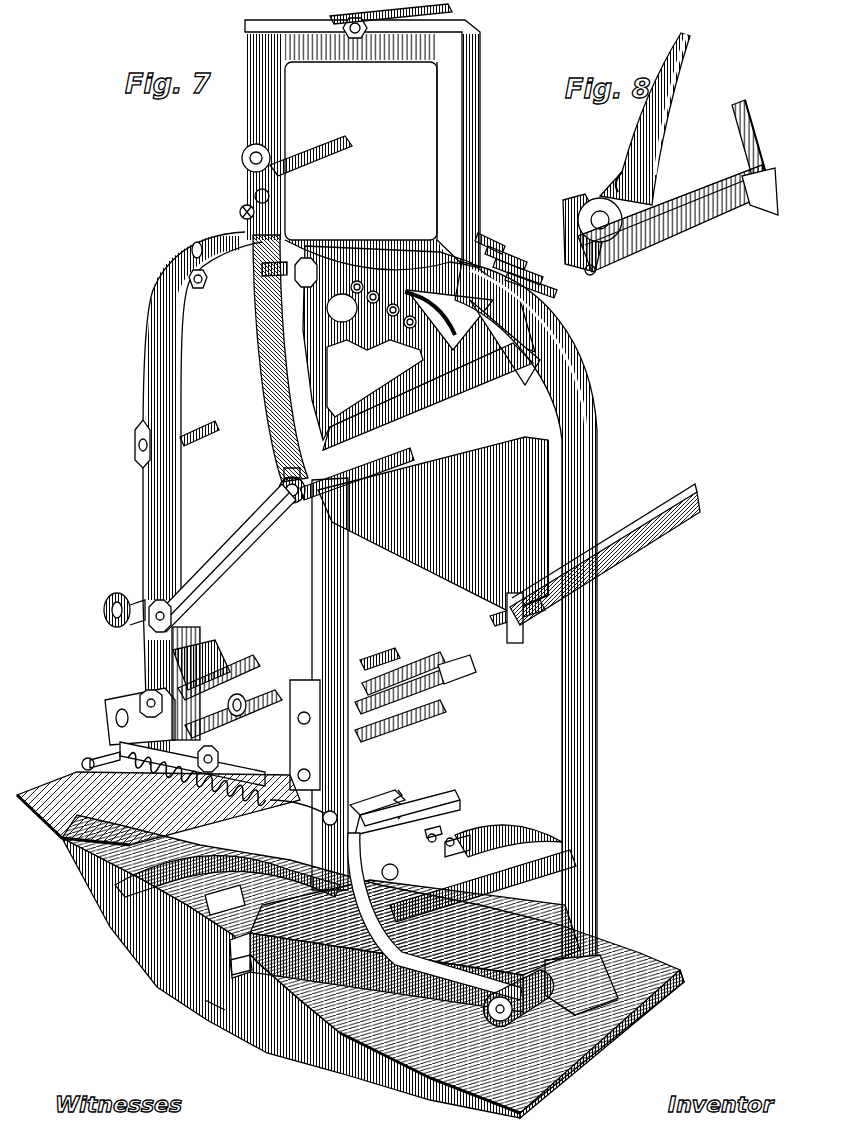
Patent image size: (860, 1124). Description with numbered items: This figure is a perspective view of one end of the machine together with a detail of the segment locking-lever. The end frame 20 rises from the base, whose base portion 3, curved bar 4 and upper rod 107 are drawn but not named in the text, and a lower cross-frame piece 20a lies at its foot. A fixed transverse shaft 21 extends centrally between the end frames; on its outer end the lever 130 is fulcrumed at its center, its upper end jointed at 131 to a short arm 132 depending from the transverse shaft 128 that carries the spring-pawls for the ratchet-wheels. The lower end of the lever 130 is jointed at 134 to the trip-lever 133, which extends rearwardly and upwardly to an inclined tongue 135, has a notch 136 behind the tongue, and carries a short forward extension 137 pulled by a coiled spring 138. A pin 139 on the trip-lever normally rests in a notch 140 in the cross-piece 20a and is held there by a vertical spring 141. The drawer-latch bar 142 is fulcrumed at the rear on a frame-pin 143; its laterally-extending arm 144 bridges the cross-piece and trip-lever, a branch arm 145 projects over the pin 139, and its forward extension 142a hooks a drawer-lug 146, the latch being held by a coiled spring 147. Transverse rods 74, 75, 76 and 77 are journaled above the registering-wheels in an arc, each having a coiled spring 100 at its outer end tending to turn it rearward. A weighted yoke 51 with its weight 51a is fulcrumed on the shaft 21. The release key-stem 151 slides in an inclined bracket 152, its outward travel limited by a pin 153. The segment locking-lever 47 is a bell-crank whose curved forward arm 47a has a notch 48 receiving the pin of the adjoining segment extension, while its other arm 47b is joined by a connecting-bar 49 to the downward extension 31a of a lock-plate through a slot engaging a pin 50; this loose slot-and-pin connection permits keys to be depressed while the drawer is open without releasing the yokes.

In FIG. 7, the base plate 3 is at (243, 1027).
In FIG. 7, the curved guide bar 4 is at (163, 883).
In FIG. 7, the end frames 20 is at (165, 516).
In FIG. 7, the lower cross-frame piece 20a is at (495, 893).
In FIG. 7, the transverse rod or shaft 21 is at (278, 489).
In FIG. 8, the downward extension of lock-plate 31a is at (733, 143).
In FIG. 8, the segment locking-lever 47 is at (573, 197).
In FIG. 8, the forward arm 47a is at (680, 110).
In FIG. 8, the remaining arm 47b is at (593, 275).
In FIG. 8, the notch or recess 48 is at (618, 183).
In FIG. 8, the connecting-bar 49 is at (663, 237).
In FIG. 8, the projecting pin 50 is at (770, 207).
In FIG. 7, the weighted yoke 51 is at (640, 560).
In FIG. 7, the weight 51a is at (482, 565).
In FIG. 7, the transverse shaft or rod 74 is at (494, 245).
In FIG. 7, the transverse shaft or rod 75 is at (521, 252).
In FIG. 7, the transverse shaft or rod 76 is at (538, 265).
In FIG. 7, the transverse shaft or rod 77 is at (551, 292).
In FIG. 7, the coiled springs 100 is at (402, 264).
In FIG. 7, the rod 107 is at (455, 9).
In FIG. 7, the transverse rod or shaft 128 is at (344, 140).
In FIG. 7, the lever 130 is at (262, 356).
In FIG. 7, the joint connection 131 is at (240, 213).
In FIG. 7, the short arm 132 is at (270, 196).
In FIG. 7, the trip-lever 133 is at (213, 1010).
In FIG. 7, the joint connection 134 is at (367, 787).
In FIG. 7, the inclined or curved tongue 135 is at (507, 837).
In FIG. 7, the notch or recess 136 is at (457, 847).
In FIG. 7, the short forward extension 137 is at (297, 803).
In FIG. 7, the coiled spring 138 is at (140, 793).
In FIG. 7, the pin 139 is at (433, 828).
In FIG. 7, the recess or notch 140 is at (430, 857).
In FIG. 7, the vertical spring 141 is at (450, 843).
In FIG. 7, the drawer-latch bar 142 is at (363, 943).
In FIG. 7, the forward extension 142a is at (237, 967).
In FIG. 7, the frame-pin 143 is at (540, 1017).
In FIG. 7, the laterally-extending arm 144 is at (385, 802).
In FIG. 7, the branch arm 145 is at (430, 837).
In FIG. 7, the drawer-lug 146 is at (215, 905).
In FIG. 7, the coiled spring 147 is at (410, 827).
In FIG. 7, the release key-stem 151 is at (138, 637).
In FIG. 7, the inclined bracket 152 is at (205, 672).
In FIG. 7, the laterally-projecting pin 153 is at (244, 705).